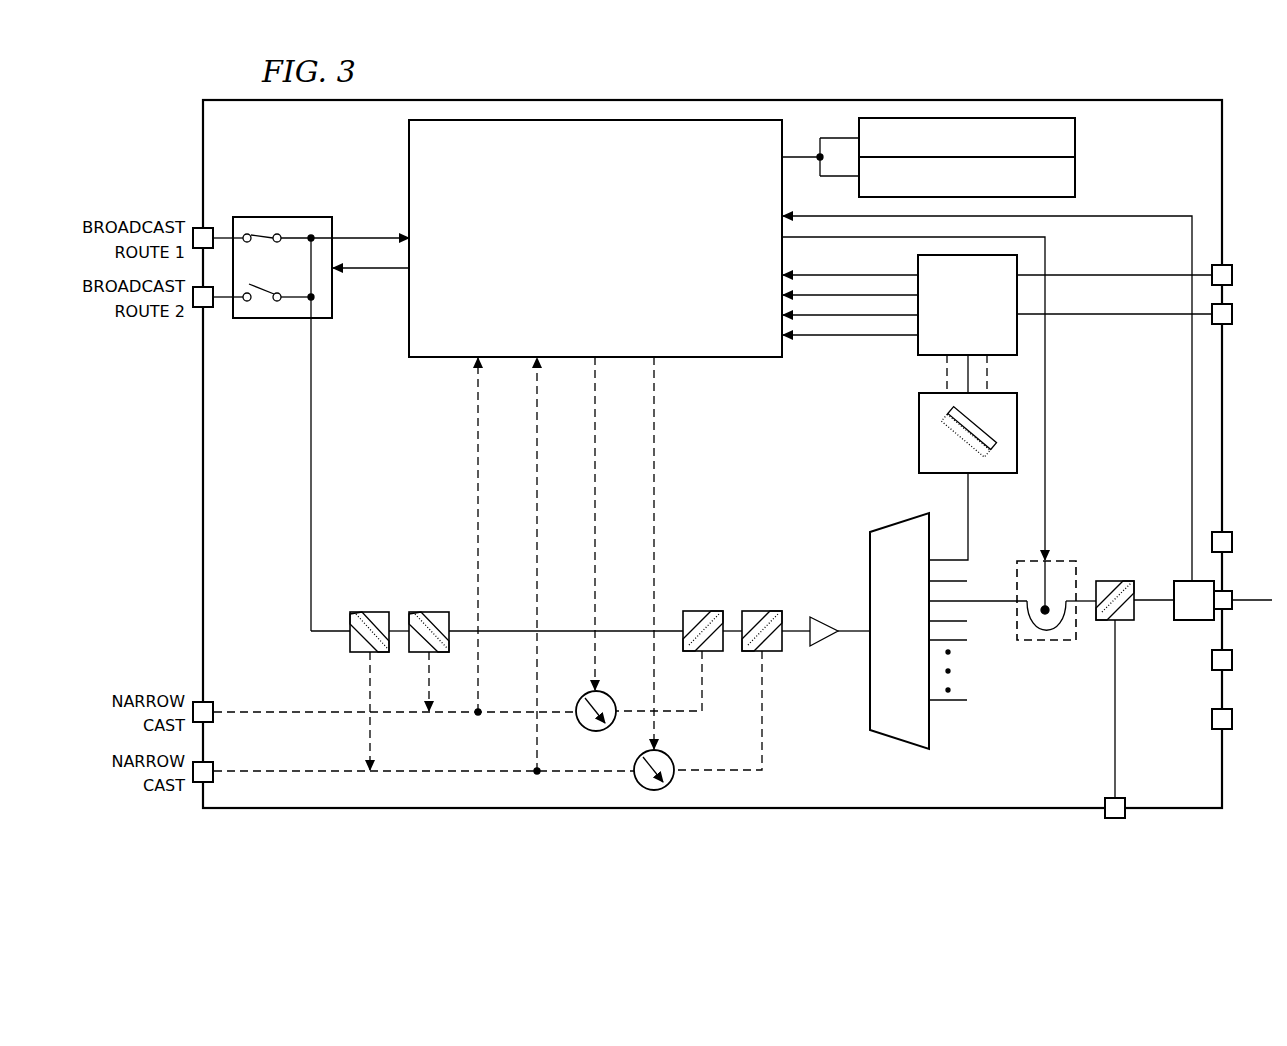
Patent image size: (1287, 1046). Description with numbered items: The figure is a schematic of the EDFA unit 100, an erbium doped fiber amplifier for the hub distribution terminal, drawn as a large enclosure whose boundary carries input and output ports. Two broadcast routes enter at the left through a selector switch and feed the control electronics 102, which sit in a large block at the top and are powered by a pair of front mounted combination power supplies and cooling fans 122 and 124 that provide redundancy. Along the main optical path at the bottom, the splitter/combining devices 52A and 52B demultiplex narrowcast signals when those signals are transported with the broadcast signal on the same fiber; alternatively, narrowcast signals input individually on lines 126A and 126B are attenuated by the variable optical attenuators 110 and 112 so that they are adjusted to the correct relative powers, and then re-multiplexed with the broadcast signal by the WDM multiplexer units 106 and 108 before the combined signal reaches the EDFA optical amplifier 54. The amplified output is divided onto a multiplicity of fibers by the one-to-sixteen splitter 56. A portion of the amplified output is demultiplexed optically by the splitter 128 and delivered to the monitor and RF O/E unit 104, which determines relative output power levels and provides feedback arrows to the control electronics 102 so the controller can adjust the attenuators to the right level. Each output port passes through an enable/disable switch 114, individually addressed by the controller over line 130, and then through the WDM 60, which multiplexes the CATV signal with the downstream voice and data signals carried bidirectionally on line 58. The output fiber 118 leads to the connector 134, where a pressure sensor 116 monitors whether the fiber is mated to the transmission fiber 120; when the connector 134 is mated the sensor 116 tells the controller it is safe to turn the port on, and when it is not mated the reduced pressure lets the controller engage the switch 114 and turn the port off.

The EDFA unit 100 is at (203, 581).
The control electronics 102 is at (578, 278).
The monitor and RF O/E unit 104 is at (950, 330).
The WDM multiplexer unit 106 is at (698, 611).
The WDM multiplexer unit 108 is at (770, 611).
The variable optical attenuator 110 is at (628, 680).
The variable optical attenuator 112 is at (686, 738).
The enable/disable switch 114 is at (1036, 641).
The sensor 116 is at (1186, 621).
The output fiber 118 is at (1152, 598).
The transmission fiber 120 is at (1250, 598).
The combination power supply and cooling fan 122 is at (1076, 133).
The combination power supply and cooling fan 124 is at (1076, 180).
The narrowcast signal input 126A is at (276, 710).
The narrowcast signal input 126B is at (276, 770).
The splitter 128 is at (919, 434).
The switch control line 130 is at (1048, 256).
The connector 134 is at (1233, 607).
The splitter/combining device 52A is at (365, 612).
The splitter/combining device 52B is at (435, 612).
The EDFA optical amplifier 54 is at (831, 618).
The splitter 56 is at (900, 745).
The voice and data line 58 is at (1115, 707).
The WDM 60 is at (1112, 581).